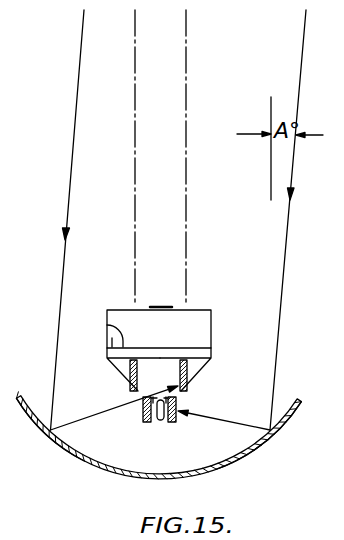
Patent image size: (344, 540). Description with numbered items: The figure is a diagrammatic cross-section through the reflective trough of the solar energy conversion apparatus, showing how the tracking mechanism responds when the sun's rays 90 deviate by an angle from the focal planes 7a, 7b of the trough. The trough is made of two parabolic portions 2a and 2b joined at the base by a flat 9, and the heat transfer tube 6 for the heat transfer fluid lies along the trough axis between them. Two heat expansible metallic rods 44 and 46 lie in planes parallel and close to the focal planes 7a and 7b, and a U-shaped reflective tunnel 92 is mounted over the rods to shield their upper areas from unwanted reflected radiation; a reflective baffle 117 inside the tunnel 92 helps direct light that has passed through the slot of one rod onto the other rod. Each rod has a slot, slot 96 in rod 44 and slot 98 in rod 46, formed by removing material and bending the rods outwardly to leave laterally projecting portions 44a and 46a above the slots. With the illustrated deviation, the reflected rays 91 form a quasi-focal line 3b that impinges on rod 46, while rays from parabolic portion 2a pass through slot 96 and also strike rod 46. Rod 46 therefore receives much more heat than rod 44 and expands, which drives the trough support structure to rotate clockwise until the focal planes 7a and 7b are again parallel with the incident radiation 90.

The sun's rays 90 is at (72, 160).
The focal plane 7a is at (136, 150).
The focal plane 7b is at (185, 203).
The reflective tunnel 92 is at (214, 325).
The reflective baffle 117 is at (107, 325).
The laterally projecting portion 44a is at (107, 357).
The laterally projecting portion 46a is at (212, 352).
The slot 96 is at (132, 391).
The slot 98 is at (184, 393).
The focal line 3b is at (170, 429).
The heat expansible metallic rod 44 is at (143, 420).
The heat expansible metallic rod 46 is at (177, 420).
The heat transfer tube 6 is at (160, 422).
The flat 9 is at (148, 481).
The parabolic portion 2a is at (73, 450).
The parabolic portion 2b is at (242, 458).
The reflected rays 91 is at (259, 448).